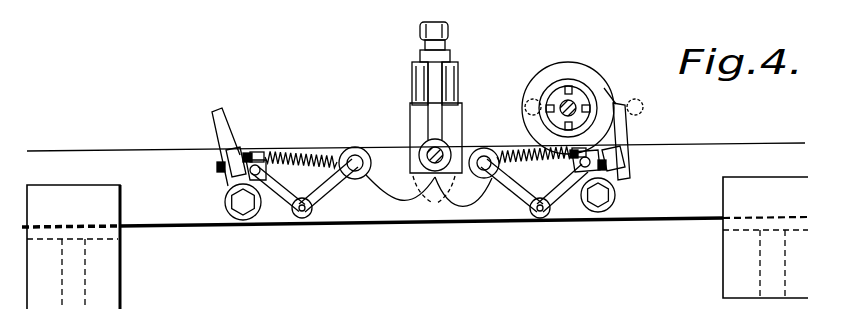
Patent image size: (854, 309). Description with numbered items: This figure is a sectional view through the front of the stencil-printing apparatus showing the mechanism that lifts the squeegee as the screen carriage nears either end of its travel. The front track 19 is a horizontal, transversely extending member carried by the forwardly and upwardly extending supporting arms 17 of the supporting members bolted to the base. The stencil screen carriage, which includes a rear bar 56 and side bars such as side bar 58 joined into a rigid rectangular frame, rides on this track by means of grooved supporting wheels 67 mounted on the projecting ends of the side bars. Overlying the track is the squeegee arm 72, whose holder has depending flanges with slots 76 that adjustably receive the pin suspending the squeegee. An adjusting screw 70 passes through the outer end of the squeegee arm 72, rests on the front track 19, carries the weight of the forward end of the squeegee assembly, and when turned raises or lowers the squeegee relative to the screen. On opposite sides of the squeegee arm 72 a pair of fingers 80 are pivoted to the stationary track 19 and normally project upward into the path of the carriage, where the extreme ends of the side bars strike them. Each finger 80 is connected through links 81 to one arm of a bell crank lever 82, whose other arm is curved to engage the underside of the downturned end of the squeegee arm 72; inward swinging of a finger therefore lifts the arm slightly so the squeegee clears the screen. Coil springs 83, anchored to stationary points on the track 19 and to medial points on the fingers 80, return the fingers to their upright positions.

The supporting arm 17 is at (115, 285).
The front track 19 is at (697, 153).
The rear bar 56 is at (571, 101).
The side bar 58 is at (527, 100).
The grooved supporting wheel 67 is at (565, 65).
The adjusting screw 70 is at (438, 23).
The squeegee arm 72 is at (457, 70).
The slot 76 is at (455, 126).
The finger 80 is at (222, 111).
The link 81 is at (278, 197).
The bell crank lever 82 is at (325, 198).
The coil spring 83 is at (308, 152).